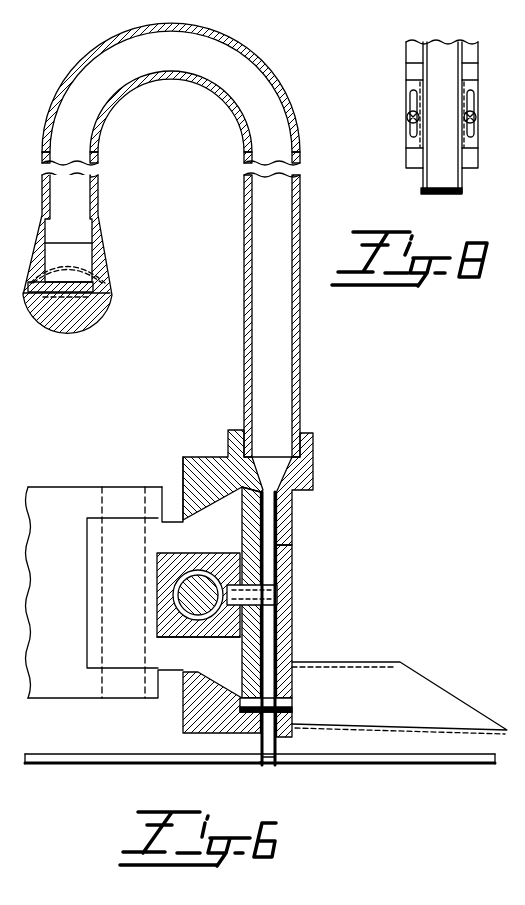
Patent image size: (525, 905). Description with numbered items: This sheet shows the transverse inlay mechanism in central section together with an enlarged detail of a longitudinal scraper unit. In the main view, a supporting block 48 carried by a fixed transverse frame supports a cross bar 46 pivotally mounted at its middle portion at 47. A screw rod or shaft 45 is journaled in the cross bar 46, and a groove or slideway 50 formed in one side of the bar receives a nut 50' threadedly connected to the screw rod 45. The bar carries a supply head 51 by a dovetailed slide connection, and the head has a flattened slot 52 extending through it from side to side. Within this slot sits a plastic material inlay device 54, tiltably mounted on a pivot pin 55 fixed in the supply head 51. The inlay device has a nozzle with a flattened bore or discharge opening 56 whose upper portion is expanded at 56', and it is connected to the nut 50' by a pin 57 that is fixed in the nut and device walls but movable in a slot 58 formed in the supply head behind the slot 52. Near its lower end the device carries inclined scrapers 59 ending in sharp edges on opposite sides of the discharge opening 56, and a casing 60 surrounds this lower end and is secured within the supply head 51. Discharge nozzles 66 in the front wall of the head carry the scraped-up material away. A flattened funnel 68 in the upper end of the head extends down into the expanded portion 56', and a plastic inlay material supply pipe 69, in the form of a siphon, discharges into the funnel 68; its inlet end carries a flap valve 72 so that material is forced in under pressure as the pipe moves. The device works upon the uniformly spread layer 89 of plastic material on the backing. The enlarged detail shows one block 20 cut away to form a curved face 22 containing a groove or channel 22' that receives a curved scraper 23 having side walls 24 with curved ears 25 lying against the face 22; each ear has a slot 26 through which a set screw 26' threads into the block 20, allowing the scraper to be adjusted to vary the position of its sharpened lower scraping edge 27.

In FIG. 8, the block 20 is at (410, 57).
In FIG. 8, the curved face 22 is at (395, 80).
In FIG. 8, the groove or channel 22' is at (486, 71).
In FIG. 8, the curved scraper 23 is at (440, 157).
In FIG. 8, the side walls 24 is at (422, 182).
In FIG. 8, the curved ears 25 is at (413, 146).
In FIG. 8, the slot 26 is at (443, 110).
In FIG. 8, the set screw 26' is at (441, 122).
In FIG. 8, the sharpened lower scraping edge 27 is at (440, 194).
In FIG. 6, the screw rod or shaft 45 is at (200, 580).
In FIG. 6, the cross bar 46 is at (165, 528).
In FIG. 6, the pivot 47 is at (100, 500).
In FIG. 6, the supporting block 48 is at (40, 493).
In FIG. 6, the groove or slideway 50 is at (198, 607).
In FIG. 6, the nut 50' is at (198, 651).
In FIG. 6, the supply head 51 is at (203, 463).
In FIG. 6, the flattened slot 52 is at (270, 566).
In FIG. 6, the plastic material inlay device 54 is at (280, 542).
In FIG. 6, the pivot pin 55 is at (283, 703).
In FIG. 6, the flattened bore or discharge opening 56 is at (249, 776).
In FIG. 6, the expanded upper portion of bore 56' is at (299, 507).
In FIG. 6, the pin 57 is at (282, 600).
In FIG. 6, the slot 58 is at (250, 572).
In FIG. 6, the inclined scrapers 59 is at (268, 764).
In FIG. 6, the casing 60 is at (286, 745).
In FIG. 6, the discharge nozzles 66 is at (380, 668).
In FIG. 6, the flattened funnel 68 is at (277, 470).
In FIG. 6, the plastic inlay material supply pipe 69 is at (297, 370).
In FIG. 6, the flap valve 72 is at (80, 283).
In FIG. 6, the uniformly spread layer 89 is at (140, 746).